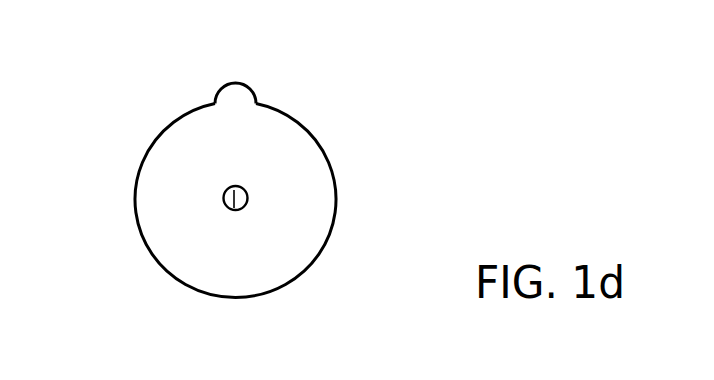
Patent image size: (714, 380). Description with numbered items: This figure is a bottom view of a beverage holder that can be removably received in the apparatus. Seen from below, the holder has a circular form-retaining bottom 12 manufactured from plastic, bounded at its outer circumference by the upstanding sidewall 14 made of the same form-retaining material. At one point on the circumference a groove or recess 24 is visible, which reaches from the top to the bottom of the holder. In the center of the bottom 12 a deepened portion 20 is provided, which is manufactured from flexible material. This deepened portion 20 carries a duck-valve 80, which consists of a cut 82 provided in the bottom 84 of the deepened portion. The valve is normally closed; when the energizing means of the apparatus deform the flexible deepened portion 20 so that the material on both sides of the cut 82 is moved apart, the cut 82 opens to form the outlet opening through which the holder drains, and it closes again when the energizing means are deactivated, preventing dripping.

The bottom 12 is at (233, 181).
The upstanding sidewall 14 is at (337, 194).
The deepened portion 20 is at (225, 196).
The groove or recess 24 is at (234, 109).
The duck-valve 80 is at (224, 200).
The cut 82 is at (245, 206).
The bottom of the deepened portion 84 is at (248, 199).